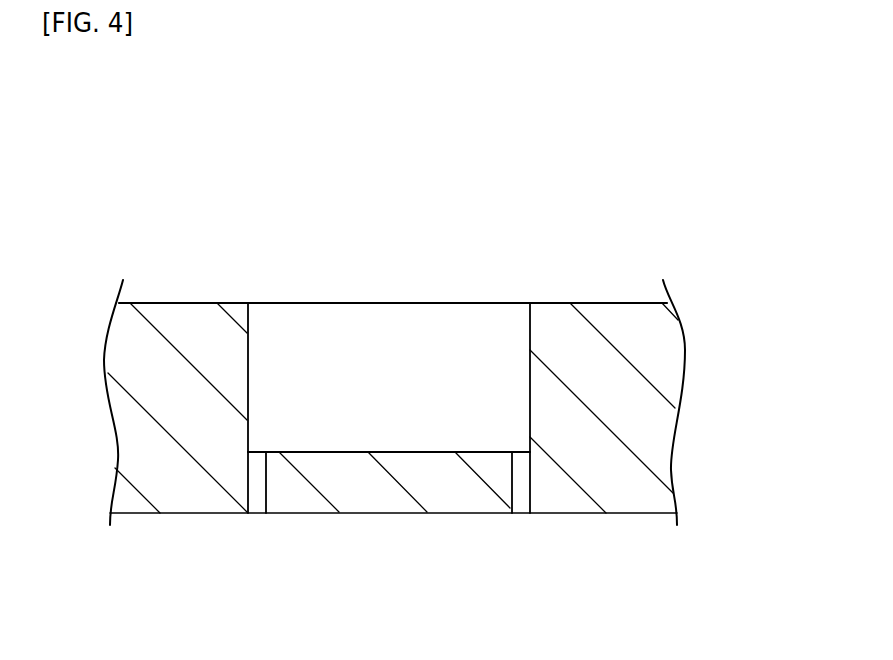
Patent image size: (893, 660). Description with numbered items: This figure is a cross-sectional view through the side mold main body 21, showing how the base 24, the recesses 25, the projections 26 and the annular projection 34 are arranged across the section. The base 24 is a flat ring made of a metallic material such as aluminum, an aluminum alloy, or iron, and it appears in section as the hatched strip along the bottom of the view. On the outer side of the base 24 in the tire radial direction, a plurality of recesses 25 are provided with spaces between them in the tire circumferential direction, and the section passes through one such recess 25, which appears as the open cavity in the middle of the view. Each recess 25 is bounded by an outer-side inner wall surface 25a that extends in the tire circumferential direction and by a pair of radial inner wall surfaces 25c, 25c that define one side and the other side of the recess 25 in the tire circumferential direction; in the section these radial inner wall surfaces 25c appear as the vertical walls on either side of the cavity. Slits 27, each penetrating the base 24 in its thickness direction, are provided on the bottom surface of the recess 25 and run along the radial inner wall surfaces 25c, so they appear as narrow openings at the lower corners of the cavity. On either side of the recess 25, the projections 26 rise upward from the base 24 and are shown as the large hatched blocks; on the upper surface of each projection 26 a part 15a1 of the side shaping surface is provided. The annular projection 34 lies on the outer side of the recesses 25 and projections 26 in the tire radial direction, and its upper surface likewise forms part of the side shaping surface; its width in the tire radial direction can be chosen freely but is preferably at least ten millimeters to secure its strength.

The side mold main body 21 is at (411, 117).
The projection 26 is at (145, 365).
The part of the side shaping surface 15a1 is at (622, 232).
The annular projection 34 is at (317, 300).
The outer-side inner wall surface 25a is at (426, 352).
The recess 25 is at (408, 452).
The radial inner wall surface 25c is at (249, 382).
The slit 27 is at (250, 486).
The base 24 is at (355, 481).